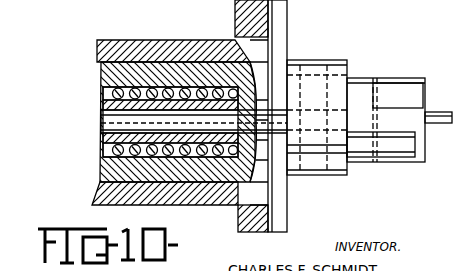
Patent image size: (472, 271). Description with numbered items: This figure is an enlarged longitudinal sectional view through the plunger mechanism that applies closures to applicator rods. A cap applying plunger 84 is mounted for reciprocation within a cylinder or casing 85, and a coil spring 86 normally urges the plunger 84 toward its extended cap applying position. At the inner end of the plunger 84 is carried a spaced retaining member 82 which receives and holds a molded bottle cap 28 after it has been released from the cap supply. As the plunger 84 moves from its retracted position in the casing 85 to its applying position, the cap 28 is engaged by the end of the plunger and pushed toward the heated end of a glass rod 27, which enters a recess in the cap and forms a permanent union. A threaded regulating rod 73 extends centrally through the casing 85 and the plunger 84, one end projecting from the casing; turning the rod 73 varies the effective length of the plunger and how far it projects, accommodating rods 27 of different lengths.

The cylinder or casing 85 is at (137, 43).
The cap applying plunger 84 is at (113, 77).
The coil spring 86 is at (115, 95).
The threaded regulating rod 73 is at (112, 120).
The molded bottle cap 28 is at (403, 82).
The retaining member 82 is at (392, 145).
The glass rod 27 is at (437, 113).